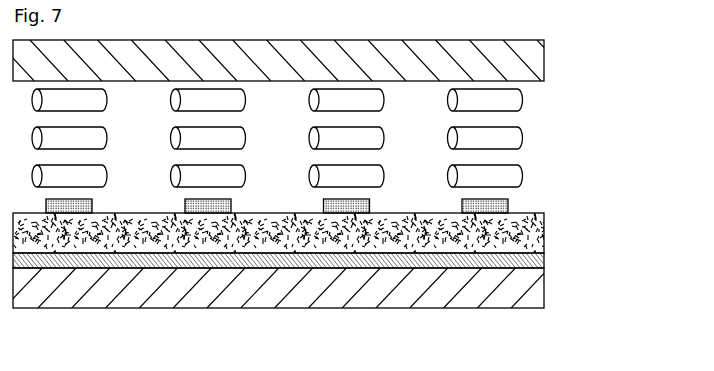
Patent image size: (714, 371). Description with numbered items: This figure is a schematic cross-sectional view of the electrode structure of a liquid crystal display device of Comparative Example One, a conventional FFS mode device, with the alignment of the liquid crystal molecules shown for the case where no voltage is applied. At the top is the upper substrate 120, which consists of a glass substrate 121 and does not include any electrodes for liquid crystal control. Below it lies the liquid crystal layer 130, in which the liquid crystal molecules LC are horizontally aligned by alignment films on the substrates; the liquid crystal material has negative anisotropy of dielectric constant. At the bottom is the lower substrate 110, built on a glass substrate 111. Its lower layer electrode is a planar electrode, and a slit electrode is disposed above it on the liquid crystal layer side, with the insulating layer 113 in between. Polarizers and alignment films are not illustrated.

The upper substrate 120 is at (337, 60).
The glass substrate 121 is at (536, 67).
The liquid crystal layer 130 is at (353, 140).
The liquid crystal molecule LC is at (514, 140).
The lower substrate 110 is at (339, 277).
The insulating layer 113 is at (540, 237).
The glass substrate 111 is at (310, 288).